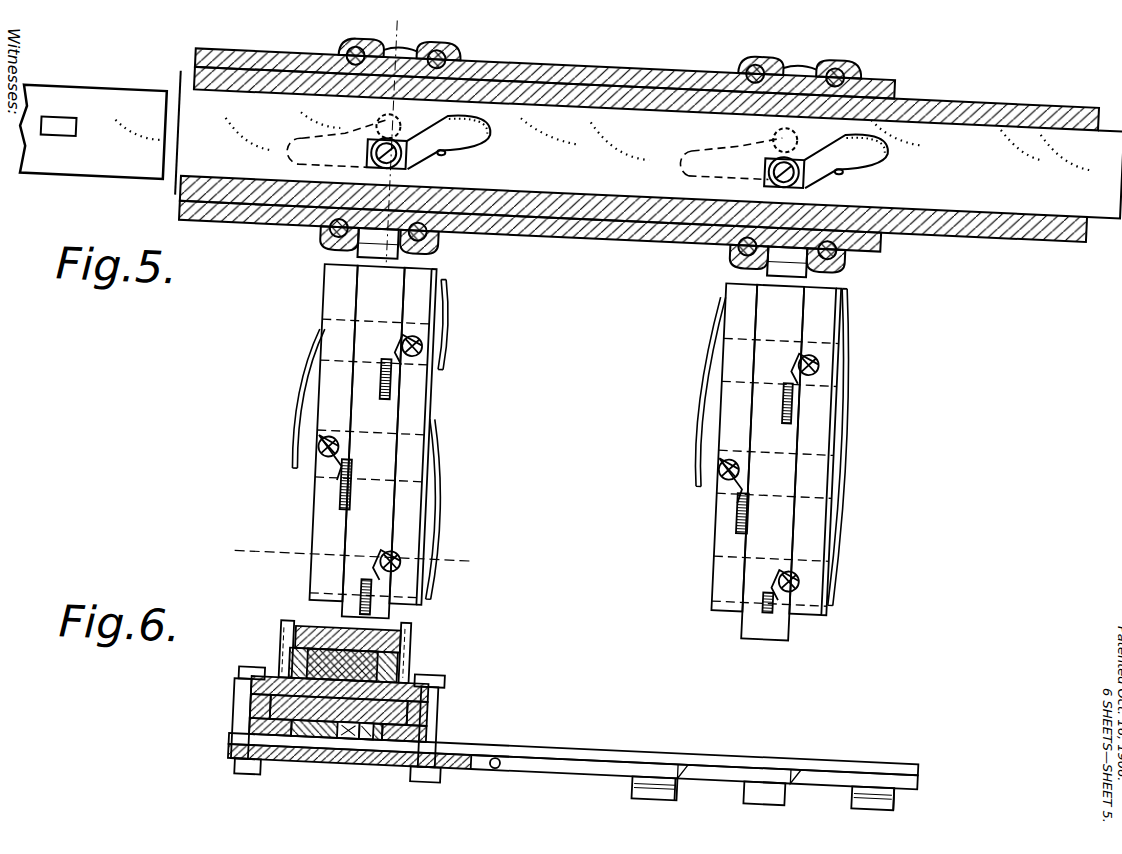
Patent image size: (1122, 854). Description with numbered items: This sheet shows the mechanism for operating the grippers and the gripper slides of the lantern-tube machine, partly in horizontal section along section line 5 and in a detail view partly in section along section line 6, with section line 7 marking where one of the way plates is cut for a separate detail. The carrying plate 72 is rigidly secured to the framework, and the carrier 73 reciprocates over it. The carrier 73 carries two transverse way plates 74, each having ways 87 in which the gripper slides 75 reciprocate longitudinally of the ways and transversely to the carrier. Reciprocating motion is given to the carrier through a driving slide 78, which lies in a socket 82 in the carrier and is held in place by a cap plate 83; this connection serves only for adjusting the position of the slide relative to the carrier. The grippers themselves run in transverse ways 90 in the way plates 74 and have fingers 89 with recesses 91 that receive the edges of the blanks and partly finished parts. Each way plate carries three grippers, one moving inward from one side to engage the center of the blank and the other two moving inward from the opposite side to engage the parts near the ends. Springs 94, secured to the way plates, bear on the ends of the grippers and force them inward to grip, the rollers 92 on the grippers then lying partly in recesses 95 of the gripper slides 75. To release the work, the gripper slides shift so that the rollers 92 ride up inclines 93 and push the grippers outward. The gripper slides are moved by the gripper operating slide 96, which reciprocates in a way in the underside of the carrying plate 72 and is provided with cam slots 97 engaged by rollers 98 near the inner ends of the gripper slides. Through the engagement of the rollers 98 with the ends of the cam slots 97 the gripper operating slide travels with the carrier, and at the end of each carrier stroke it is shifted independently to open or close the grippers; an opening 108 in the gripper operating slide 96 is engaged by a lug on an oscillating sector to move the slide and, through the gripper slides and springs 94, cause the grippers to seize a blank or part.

In FIG. 6, the section line 5— 5 is at (230, 735).
In FIG. 5, the section line 6— 6 is at (380, 40).
In FIG. 6, the section line 6— 6 is at (276, 616).
In FIG. 5, the section line 7— 7 is at (354, 560).
In FIG. 5, the carrying plate 72 is at (572, 91).
In FIG. 6, the carrying plate 72 is at (428, 716).
In FIG. 5, the carrier 73 is at (534, 74).
In FIG. 6, the carrier 73 is at (252, 706).
In FIG. 5, the way plate 74 is at (426, 283).
In FIG. 6, the way plate 74 is at (655, 748).
In FIG. 5, the gripper slide 75 is at (746, 646).
In FIG. 6, the driving slide 78 is at (398, 652).
In FIG. 6, the socket 82 is at (282, 660).
In FIG. 6, the cap plate 83 is at (314, 640).
In FIG. 5, the ways 87 is at (430, 448).
In FIG. 5, the finger 89 is at (436, 370).
In FIG. 6, the finger 89 is at (660, 796).
In FIG. 6, the transverse way 90 is at (686, 774).
In FIG. 6, the recess 91 is at (680, 790).
In FIG. 5, the roller 92 is at (420, 353).
In FIG. 5, the incline 93 is at (405, 376).
In FIG. 5, the spring 94 is at (442, 345).
In FIG. 6, the spring 94 is at (548, 766).
In FIG. 5, the recess 95 is at (378, 392).
In FIG. 5, the gripper operating slide 96 is at (595, 142).
In FIG. 6, the gripper operating slide 96 is at (322, 750).
In FIG. 5, the cam slot 97 is at (447, 158).
In FIG. 6, the cam slot 97 is at (368, 750).
In FIG. 5, the roller 98 is at (372, 170).
In FIG. 6, the roller 98 is at (349, 750).
In FIG. 5, the opening 108 is at (60, 146).